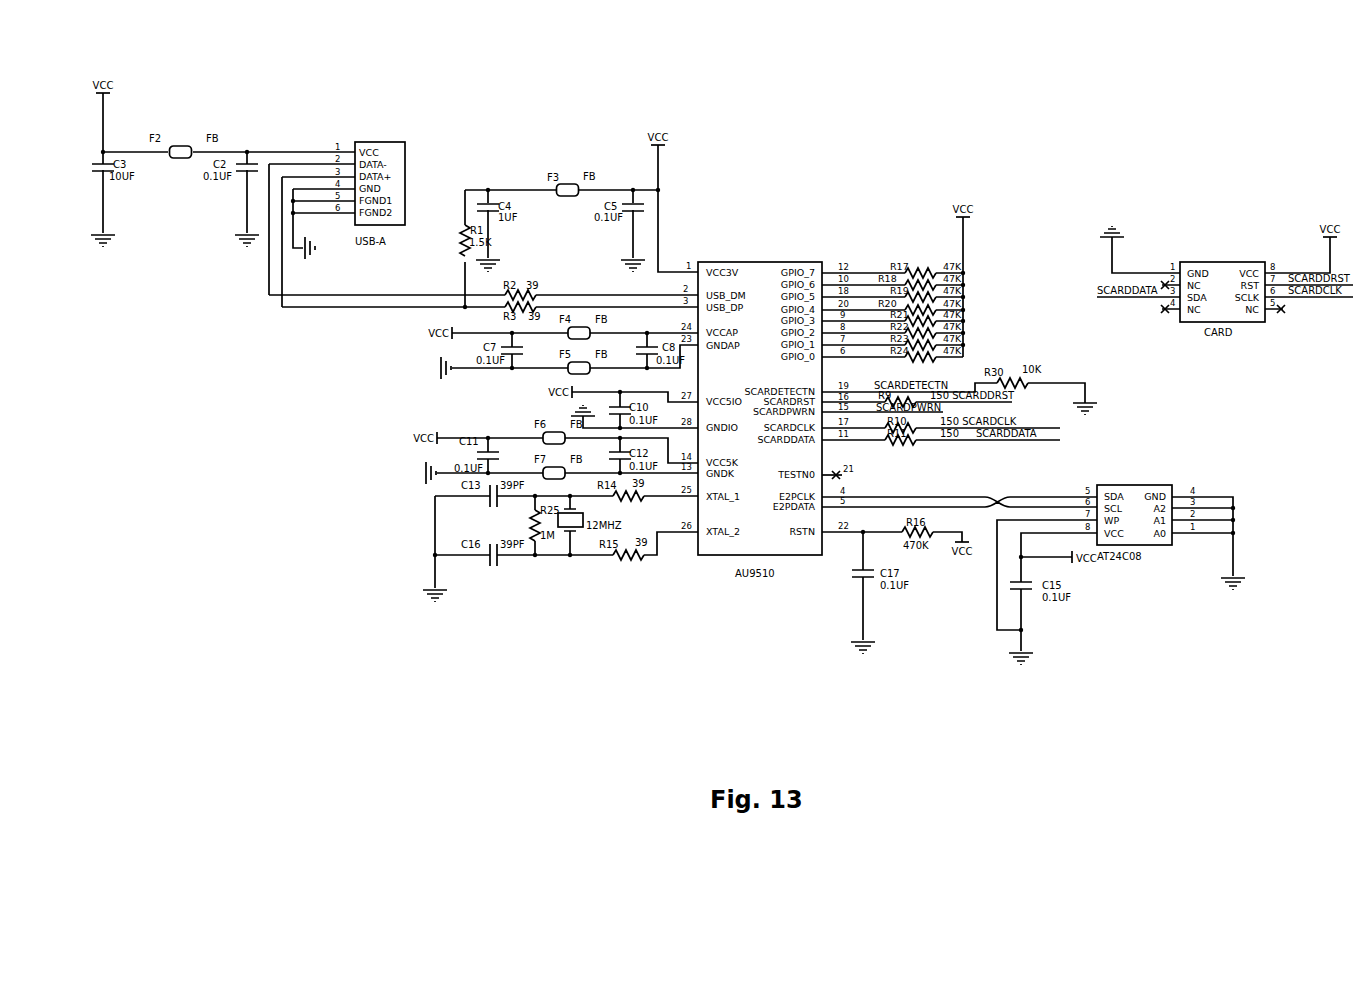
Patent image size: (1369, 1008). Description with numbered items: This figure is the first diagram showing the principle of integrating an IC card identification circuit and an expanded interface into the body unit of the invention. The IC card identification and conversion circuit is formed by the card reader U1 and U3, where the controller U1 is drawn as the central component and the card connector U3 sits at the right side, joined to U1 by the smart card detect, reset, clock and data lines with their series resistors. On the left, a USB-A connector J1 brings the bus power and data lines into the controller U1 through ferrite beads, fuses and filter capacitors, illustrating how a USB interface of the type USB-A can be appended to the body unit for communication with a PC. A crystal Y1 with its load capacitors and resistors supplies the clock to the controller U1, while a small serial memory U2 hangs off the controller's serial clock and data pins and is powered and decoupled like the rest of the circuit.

The card reader U1 is at (760, 397).
The EEPROM AT24C08 U2 is at (1134, 508).
The card reader U3 is at (1222, 285).
The USB-A connector J1 is at (337, 218).
The 12 MHz crystal Y1 is at (578, 519).